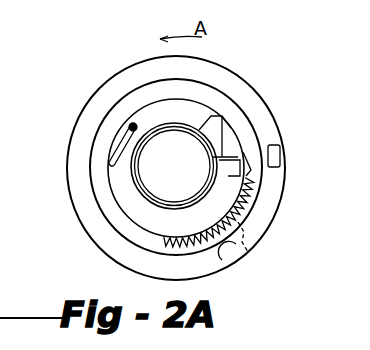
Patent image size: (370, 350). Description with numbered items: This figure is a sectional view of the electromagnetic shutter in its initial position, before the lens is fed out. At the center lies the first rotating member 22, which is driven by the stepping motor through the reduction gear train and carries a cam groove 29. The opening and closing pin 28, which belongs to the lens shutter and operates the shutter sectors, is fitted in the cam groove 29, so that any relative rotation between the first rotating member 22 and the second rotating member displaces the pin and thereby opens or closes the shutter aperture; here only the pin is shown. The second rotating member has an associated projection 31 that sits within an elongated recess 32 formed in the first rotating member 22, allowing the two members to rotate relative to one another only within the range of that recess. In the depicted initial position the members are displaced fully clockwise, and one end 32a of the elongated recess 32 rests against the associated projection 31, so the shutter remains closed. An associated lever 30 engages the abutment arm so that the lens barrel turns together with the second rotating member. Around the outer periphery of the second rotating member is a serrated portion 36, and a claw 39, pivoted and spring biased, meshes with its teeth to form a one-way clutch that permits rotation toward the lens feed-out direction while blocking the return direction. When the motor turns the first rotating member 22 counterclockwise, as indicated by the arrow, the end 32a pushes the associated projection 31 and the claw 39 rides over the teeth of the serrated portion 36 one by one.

The first rotating member 22 is at (202, 108).
The opening and closing pin 28 is at (136, 120).
The cam groove 29 is at (117, 148).
The associated lever 30 is at (282, 152).
The associated projection 31 is at (242, 164).
The elongated recess 32 is at (232, 133).
The end of the elongated recess 32a is at (244, 154).
The serrated portion 36 is at (248, 209).
The claw 39 is at (248, 252).